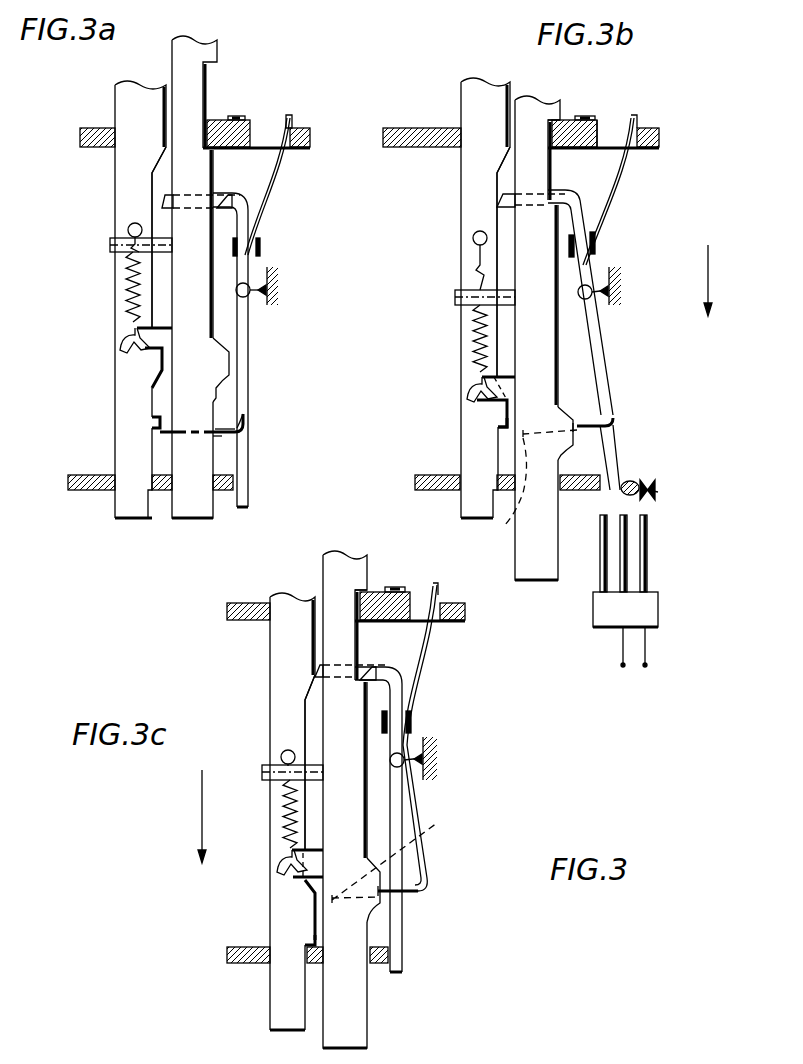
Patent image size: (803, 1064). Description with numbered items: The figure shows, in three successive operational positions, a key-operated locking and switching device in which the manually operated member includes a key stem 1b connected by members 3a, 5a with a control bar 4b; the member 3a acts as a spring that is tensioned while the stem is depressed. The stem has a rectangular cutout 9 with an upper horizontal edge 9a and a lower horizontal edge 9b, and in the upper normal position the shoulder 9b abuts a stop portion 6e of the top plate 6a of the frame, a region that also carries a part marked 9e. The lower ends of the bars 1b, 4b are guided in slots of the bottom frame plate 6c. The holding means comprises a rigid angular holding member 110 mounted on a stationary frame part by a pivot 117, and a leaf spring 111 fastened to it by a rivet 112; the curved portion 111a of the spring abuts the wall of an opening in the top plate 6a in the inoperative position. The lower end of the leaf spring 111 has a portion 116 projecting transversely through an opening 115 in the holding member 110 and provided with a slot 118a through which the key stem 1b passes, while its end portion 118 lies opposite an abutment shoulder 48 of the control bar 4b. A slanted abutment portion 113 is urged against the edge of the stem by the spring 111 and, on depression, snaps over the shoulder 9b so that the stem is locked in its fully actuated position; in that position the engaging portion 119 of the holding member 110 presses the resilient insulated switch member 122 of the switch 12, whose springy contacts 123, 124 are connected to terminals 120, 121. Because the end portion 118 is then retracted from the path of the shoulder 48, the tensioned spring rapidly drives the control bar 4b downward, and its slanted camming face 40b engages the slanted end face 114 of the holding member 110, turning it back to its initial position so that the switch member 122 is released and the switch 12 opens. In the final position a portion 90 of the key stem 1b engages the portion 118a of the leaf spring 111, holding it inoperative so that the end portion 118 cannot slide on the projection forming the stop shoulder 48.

In FIG. 3a, the key stem 1b is at (197, 50).
In FIG. 3b, the key stem 1b is at (540, 115).
In FIG. 3c, the key stem 1b is at (355, 1022).
In FIG. 3a, the connecting member 3a is at (128, 290).
In FIG. 3b, the connecting member 3a is at (485, 304).
In FIG. 3c, the connecting member 3a is at (292, 800).
In FIG. 3a, the control bar 4b is at (130, 108).
In FIG. 3b, the control bar 4b is at (478, 101).
In FIG. 3c, the control bar 4b is at (292, 607).
In FIG. 3a, the connecting member 5a is at (128, 342).
In FIG. 3b, the connecting member 5a is at (487, 402).
In FIG. 3c, the connecting member 5a is at (300, 895).
In FIG. 3a, the top plate 6a is at (310, 135).
In FIG. 3b, the top plate 6a is at (645, 130).
In FIG. 3c, the top plate 6a is at (228, 607).
In FIG. 3a, the bottom frame plate 6c is at (70, 482).
In FIG. 3b, the bottom frame plate 6c is at (440, 476).
In FIG. 3c, the bottom frame plate 6c is at (228, 955).
In FIG. 3a, the stop portion 6e is at (250, 122).
In FIG. 3b, the stop portion 6e is at (574, 131).
In FIG. 3c, the stop portion 6e is at (410, 595).
In FIG. 3a, the rectangular cutout 9 is at (214, 99).
In FIG. 3b, the upper horizontal edge 9a is at (568, 122).
In FIG. 3c, the upper horizontal edge 9a is at (360, 592).
In FIG. 3a, the lower horizontal edge 9b is at (208, 68).
In FIG. 3b, the lower horizontal edge 9b is at (556, 205).
In FIG. 3c, the lower horizontal edge 9b is at (362, 683).
In FIG. 3b, the stop face 9e is at (598, 128).
In FIG. 3b, the switch 12 is at (640, 607).
In FIG. 3a, the slanted camming face 40b is at (158, 160).
In FIG. 3b, the slanted camming face 40b is at (500, 163).
In FIG. 3c, the slanted camming face 40b is at (308, 688).
In FIG. 3a, the abutment shoulder 48 is at (156, 420).
In FIG. 3b, the abutment shoulder 48 is at (500, 422).
In FIG. 3c, the abutment shoulder 48 is at (310, 935).
In FIG. 3a, the portion of key stem 90 is at (222, 383).
In FIG. 3b, the portion of key stem 90 is at (565, 445).
In FIG. 3c, the portion of key stem 90 is at (380, 912).
In FIG. 3a, the holding member 110 is at (243, 360).
In FIG. 3b, the holding member 110 is at (604, 263).
In FIG. 3c, the holding member 110 is at (378, 819).
In FIG. 3a, the leaf spring 111 is at (270, 195).
In FIG. 3b, the leaf spring 111 is at (622, 180).
In FIG. 3c, the leaf spring 111 is at (430, 645).
In FIG. 3a, the curved portion 111a is at (292, 118).
In FIG. 3a, the rivet 112 is at (260, 247).
In FIG. 3b, the rivet 112 is at (598, 237).
In FIG. 3c, the rivet 112 is at (410, 718).
In FIG. 3a, the slanted abutment portion 113 is at (225, 205).
In FIG. 3b, the slanted abutment portion 113 is at (558, 196).
In FIG. 3c, the slanted abutment portion 113 is at (378, 675).
In FIG. 3a, the slanted end face 114 is at (165, 200).
In FIG. 3b, the slanted end face 114 is at (497, 198).
In FIG. 3c, the slanted end face 114 is at (318, 670).
In FIG. 3a, the opening 115 is at (217, 436).
In FIG. 3b, the opening 115 is at (614, 418).
In FIG. 3c, the opening 115 is at (420, 896).
In FIG. 3a, the transversely projecting portion 116 is at (245, 420).
In FIG. 3c, the transversely projecting portion 116 is at (428, 878).
In FIG. 3a, the pivot 117 is at (247, 298).
In FIG. 3b, the pivot 117 is at (590, 298).
In FIG. 3c, the pivot 117 is at (402, 765).
In FIG. 3a, the end portion 118 is at (160, 432).
In FIG. 3b, the end portion 118 is at (503, 527).
In FIG. 3c, the end portion 118 is at (404, 858).
In FIG. 3a, the slot 118a is at (216, 439).
In FIG. 3b, the slot 118a is at (578, 432).
In FIG. 3c, the slot 118a is at (385, 905).
In FIG. 3b, the engaging portion 119 is at (615, 498).
In FIG. 3b, the terminal 120 is at (623, 668).
In FIG. 3b, the terminal 121 is at (645, 668).
In FIG. 3b, the switch member 122 is at (627, 485).
In FIG. 3b, the springy contact 123 is at (648, 486).
In FIG. 3b, the springy contact 124 is at (658, 492).